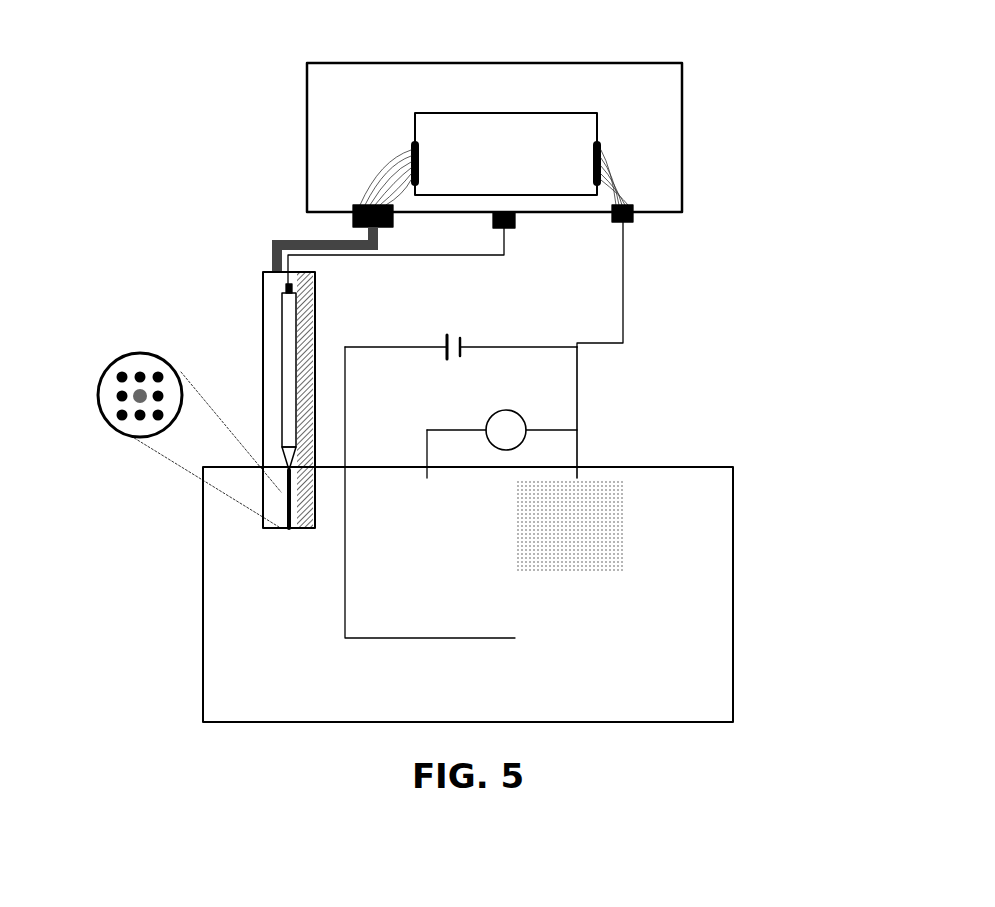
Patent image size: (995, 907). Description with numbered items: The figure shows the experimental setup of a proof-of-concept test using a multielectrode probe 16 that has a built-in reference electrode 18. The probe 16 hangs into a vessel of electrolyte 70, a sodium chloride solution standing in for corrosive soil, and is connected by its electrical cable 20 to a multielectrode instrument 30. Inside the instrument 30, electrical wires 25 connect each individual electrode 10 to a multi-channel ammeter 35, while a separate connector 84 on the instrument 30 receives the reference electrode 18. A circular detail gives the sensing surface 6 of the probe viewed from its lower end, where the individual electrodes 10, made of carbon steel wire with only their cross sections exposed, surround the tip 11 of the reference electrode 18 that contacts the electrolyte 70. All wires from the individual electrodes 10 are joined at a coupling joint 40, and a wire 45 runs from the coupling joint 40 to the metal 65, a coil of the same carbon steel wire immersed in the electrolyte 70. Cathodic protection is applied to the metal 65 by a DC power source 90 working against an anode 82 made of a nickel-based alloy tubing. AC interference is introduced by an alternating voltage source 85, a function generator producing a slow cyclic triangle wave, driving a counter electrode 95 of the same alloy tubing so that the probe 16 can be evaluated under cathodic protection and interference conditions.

The multielectrode instrument 30 is at (695, 99).
The multi-channel ammeter 35 is at (602, 128).
The electrical wires 25 is at (356, 169).
The electrical cable 20 is at (268, 248).
The multielectrode probe with built-in reference electrode 16 is at (262, 383).
The reference electrode 18 is at (287, 352).
The connector 84 is at (505, 228).
The coupling joint 40 is at (625, 222).
The DC power source 90 is at (452, 334).
The alternating voltage source 85 is at (490, 417).
The counter electrode 95 is at (388, 478).
The wire 45 is at (577, 418).
The buried pipe or immersed metal structure 65 is at (617, 535).
The electrolyte 70 is at (680, 550).
The anode 82 is at (628, 668).
The sensing surface of multielectrode probe with built-in reference electrode 6 is at (92, 379).
The individual electrodes 10 is at (121, 374).
The tip of reference electrode 11 is at (142, 392).